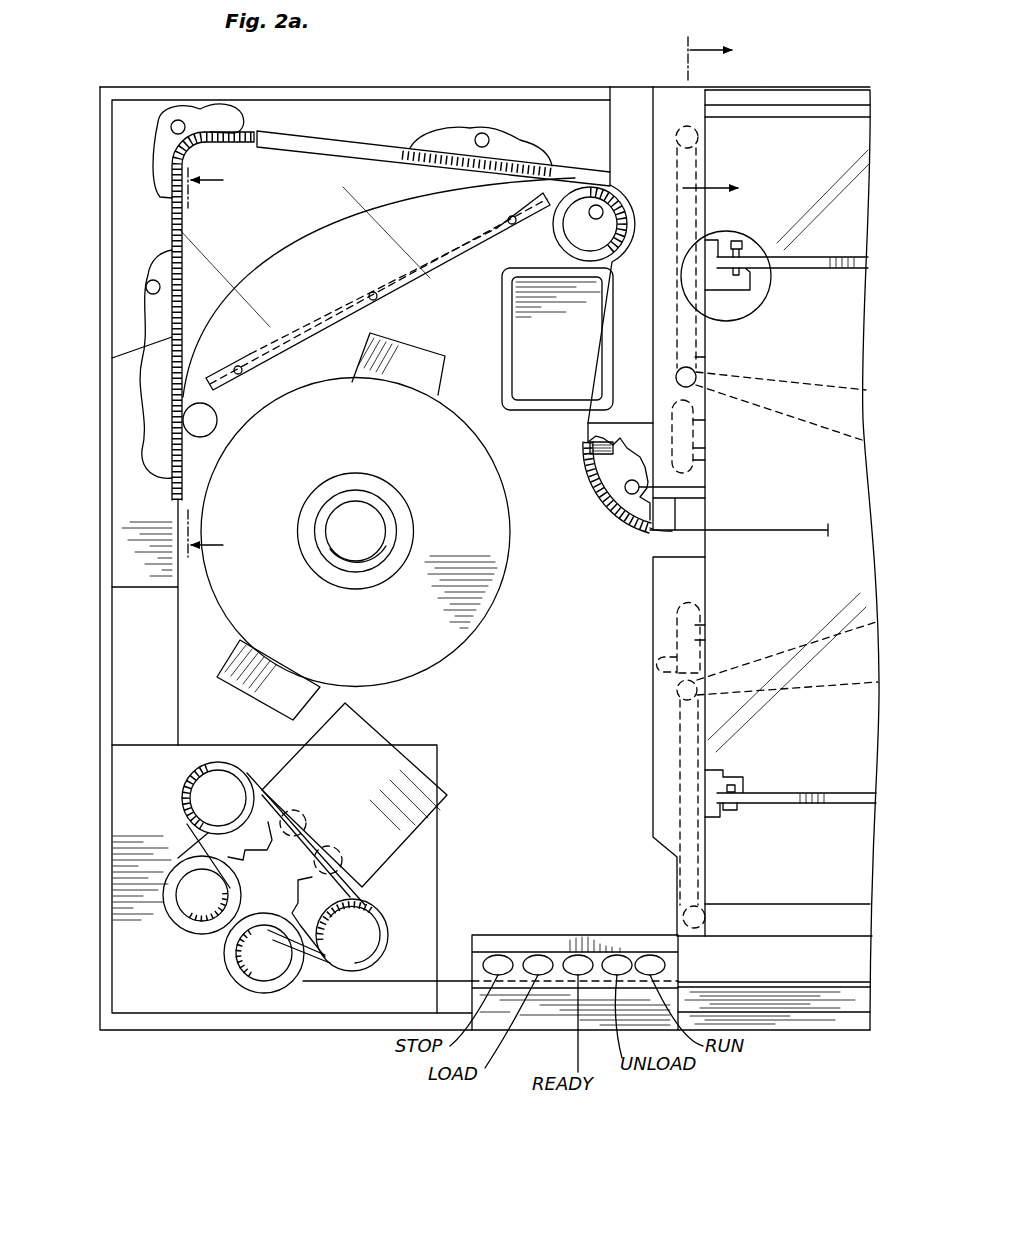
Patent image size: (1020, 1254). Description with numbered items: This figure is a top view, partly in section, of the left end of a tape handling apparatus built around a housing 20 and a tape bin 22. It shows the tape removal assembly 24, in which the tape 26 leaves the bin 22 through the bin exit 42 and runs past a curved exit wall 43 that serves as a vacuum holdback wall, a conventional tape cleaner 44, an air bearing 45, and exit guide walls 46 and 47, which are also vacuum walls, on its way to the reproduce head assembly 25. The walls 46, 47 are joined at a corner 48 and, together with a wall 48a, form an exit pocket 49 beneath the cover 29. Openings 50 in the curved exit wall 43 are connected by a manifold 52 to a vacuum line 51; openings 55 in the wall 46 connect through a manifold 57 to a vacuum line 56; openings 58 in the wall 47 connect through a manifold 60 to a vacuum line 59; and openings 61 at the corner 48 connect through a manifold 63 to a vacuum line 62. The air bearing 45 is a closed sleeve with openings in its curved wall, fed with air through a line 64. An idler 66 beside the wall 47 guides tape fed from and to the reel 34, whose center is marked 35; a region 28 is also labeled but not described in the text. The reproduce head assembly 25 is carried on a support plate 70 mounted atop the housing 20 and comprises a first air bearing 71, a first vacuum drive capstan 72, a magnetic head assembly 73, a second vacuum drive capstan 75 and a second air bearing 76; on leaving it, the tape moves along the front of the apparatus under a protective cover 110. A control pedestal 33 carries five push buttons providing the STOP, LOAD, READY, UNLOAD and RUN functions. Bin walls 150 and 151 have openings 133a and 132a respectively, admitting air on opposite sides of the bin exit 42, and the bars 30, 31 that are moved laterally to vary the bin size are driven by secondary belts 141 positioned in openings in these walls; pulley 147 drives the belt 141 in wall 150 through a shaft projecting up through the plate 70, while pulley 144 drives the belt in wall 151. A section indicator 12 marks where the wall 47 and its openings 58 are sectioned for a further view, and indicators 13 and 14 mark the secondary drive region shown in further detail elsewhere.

The section line 12- 12 is at (222, 362).
The section line 13- 13 is at (723, 109).
The detail circle 14 is at (726, 280).
The housing 20 is at (100, 688).
The bin 22 is at (882, 330).
The tape removal assembly 24 is at (220, 72).
The reproduce head assembly 25 is at (222, 988).
The tape 26 is at (768, 534).
The mounting plate 28 is at (787, 177).
The cover 29 is at (377, 287).
The bar 30 is at (812, 266).
The bar 31 is at (800, 792).
The control pedestal 33 is at (560, 958).
The reel 34 is at (458, 630).
The reel hub 35 is at (378, 500).
The bin exit 42 is at (656, 534).
The curved exit wall 43 is at (600, 508).
The tape cleaner 44 is at (557, 339).
The air bearing 45 is at (567, 242).
The exit guide wall 46 is at (568, 171).
The exit guide wall 47 is at (162, 488).
The corner 48 is at (170, 153).
The wall 48a is at (427, 295).
The exit pocket 49 is at (323, 165).
The openings 50 is at (587, 453).
The vacuum line 51 is at (653, 487).
The manifold 52 is at (618, 445).
The openings 55 is at (443, 172).
The vacuum line 56 is at (482, 132).
The manifold 57 is at (510, 146).
The openings 58 is at (172, 367).
The vacuum line 59 is at (146, 287).
The manifold 60 is at (152, 388).
The openings 61 is at (212, 142).
The vacuum line 62 is at (176, 118).
The manifold 63 is at (160, 134).
The line 64 is at (600, 210).
The idler 66 is at (183, 420).
The support plate 70 is at (428, 851).
The first air bearing 71 is at (190, 905).
The first vacuum drive capstan 72 is at (218, 775).
The magnetic head assembly 73 is at (354, 795).
The second vacuum drive capstan 75 is at (385, 940).
The second air bearing 76 is at (270, 968).
The protective cover 110 is at (812, 997).
The openings 132a is at (705, 626).
The openings 133a is at (705, 450).
The secondary belt 141 is at (700, 357).
The pulley 144 is at (678, 690).
The pulley 147 is at (700, 385).
The bin wall 150 is at (657, 253).
The bin wall 151 is at (653, 770).